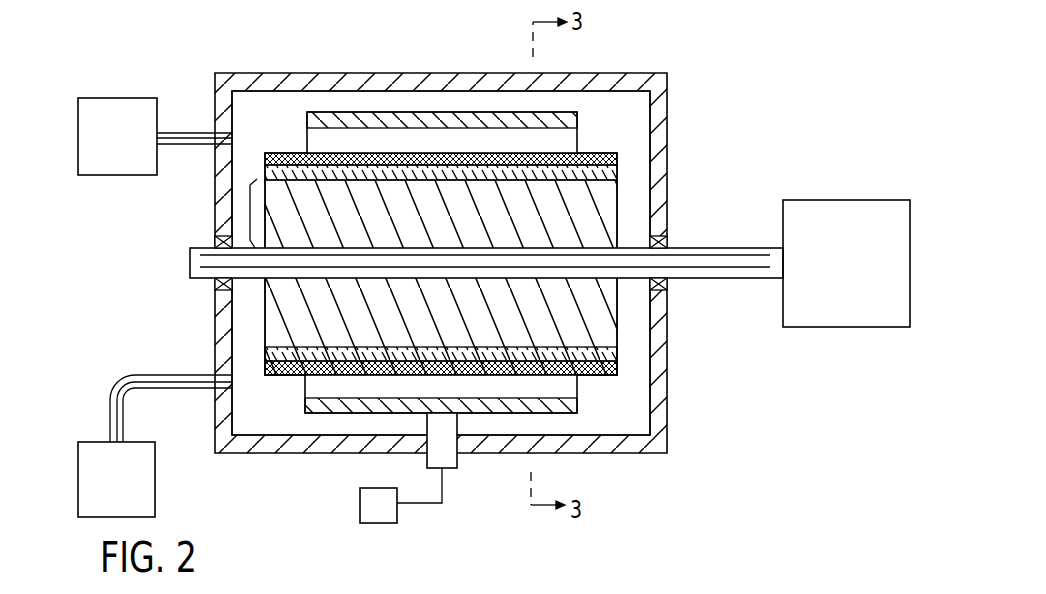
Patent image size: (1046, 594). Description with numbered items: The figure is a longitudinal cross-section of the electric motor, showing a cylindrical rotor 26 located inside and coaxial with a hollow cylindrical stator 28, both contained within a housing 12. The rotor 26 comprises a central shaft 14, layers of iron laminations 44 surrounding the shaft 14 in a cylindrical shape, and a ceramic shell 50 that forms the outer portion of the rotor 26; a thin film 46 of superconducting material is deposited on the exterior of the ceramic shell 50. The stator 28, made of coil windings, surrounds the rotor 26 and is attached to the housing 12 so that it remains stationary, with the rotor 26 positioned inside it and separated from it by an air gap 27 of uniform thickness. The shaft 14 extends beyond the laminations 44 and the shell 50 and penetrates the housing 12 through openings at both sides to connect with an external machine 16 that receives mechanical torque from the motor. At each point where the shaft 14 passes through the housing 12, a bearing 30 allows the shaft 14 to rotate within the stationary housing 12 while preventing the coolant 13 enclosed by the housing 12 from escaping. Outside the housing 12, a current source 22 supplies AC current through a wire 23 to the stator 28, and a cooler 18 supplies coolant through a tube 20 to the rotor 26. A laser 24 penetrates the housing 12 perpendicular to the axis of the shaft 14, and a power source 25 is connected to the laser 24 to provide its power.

The housing 12 is at (602, 455).
The coolant 13 is at (283, 121).
The shaft 14 is at (720, 248).
The machine 16 is at (857, 322).
The cooler 18 is at (157, 474).
The tube 20 is at (108, 425).
The current source 22 is at (119, 98).
The wire 23 is at (192, 145).
The laser 24 is at (449, 470).
The power source 25 is at (360, 506).
The rotor 26 is at (358, 386).
The air gap 27 is at (522, 382).
The stator 28 is at (577, 148).
The bearing 30 is at (213, 282).
The iron laminations 44 is at (250, 213).
The thin film 46 is at (446, 165).
The ceramic shell 50 is at (390, 153).